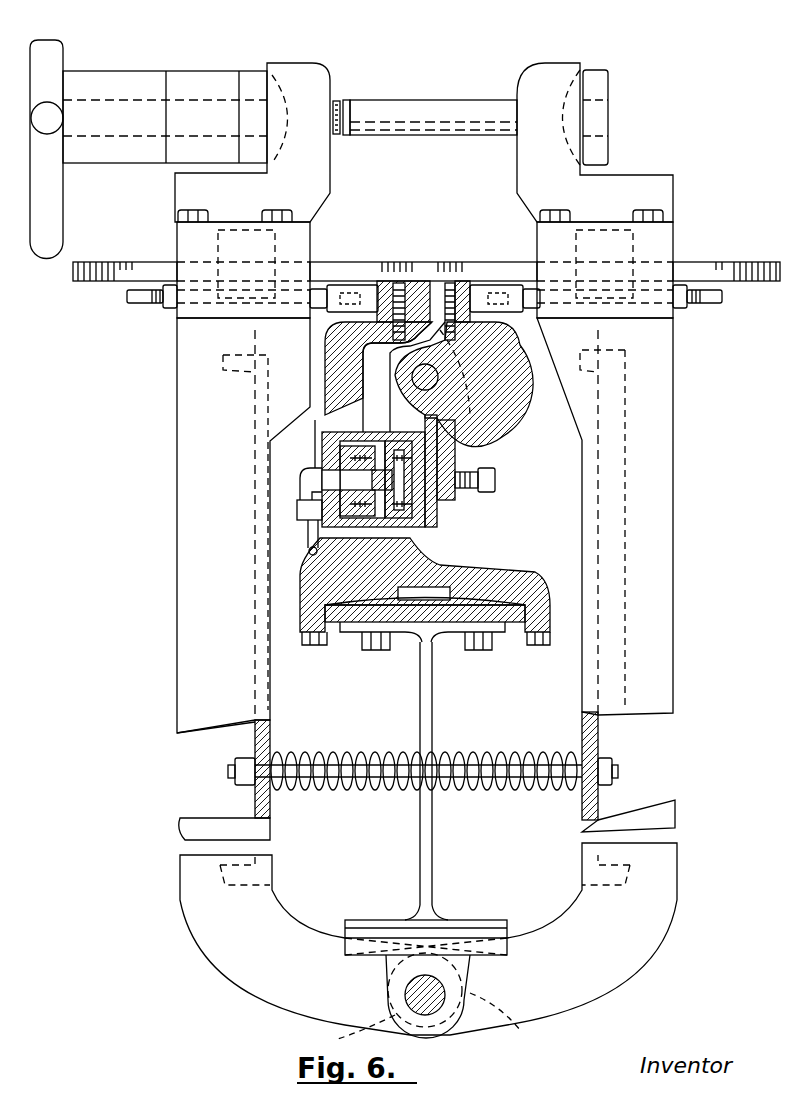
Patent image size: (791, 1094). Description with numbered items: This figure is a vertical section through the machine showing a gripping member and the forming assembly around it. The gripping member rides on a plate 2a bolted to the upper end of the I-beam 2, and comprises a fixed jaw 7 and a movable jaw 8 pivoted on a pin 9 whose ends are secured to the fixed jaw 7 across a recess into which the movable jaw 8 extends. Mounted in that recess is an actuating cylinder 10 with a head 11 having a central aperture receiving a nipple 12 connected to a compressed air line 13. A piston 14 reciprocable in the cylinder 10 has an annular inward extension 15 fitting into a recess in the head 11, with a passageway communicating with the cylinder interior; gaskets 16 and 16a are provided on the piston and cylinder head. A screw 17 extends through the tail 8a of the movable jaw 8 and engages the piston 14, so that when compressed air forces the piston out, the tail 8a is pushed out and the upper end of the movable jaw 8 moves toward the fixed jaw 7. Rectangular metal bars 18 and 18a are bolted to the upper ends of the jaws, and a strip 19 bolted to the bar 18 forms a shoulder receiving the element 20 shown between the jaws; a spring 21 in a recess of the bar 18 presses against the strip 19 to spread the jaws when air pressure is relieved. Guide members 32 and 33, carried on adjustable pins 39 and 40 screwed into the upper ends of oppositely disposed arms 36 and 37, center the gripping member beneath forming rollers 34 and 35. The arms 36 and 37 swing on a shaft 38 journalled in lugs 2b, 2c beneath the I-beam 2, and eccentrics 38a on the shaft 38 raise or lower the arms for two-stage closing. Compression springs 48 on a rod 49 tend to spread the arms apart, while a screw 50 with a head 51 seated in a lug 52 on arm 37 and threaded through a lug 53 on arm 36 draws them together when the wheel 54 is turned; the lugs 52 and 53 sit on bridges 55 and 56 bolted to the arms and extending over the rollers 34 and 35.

The I-beam 2 is at (434, 688).
The plate 2a is at (400, 635).
The lug 2b is at (505, 1019).
The lug 2c is at (356, 1032).
The fixed jaw 7 is at (478, 576).
The movable jaw 8 is at (512, 440).
The tail 8a is at (456, 498).
The pin 9 is at (411, 377).
The actuating cylinder 10 is at (378, 432).
The head 11 is at (340, 450).
The nipple 12 is at (322, 480).
The compressed air line 13 is at (316, 540).
The piston 14 is at (400, 441).
The annular inward extension 15 is at (367, 503).
The gasket 16 is at (392, 441).
The gasket 16a is at (437, 517).
The screw 17 is at (497, 477).
The rectangular metal bar 18 is at (386, 281).
The rectangular metal bar 18a is at (466, 281).
The strip 19 is at (402, 283).
The element 20 is at (450, 283).
The spring 21 is at (397, 346).
The guide member 32 is at (335, 312).
The guide member 33 is at (512, 312).
The forming roller 34 is at (100, 283).
The forming roller 35 is at (745, 283).
The arm 36 is at (177, 573).
The arm 37 is at (676, 598).
The shaft 38 is at (435, 1005).
The eccentric 38a is at (405, 993).
The adjustable pin 39 is at (135, 308).
The adjustable pin 40 is at (700, 308).
The compression spring 48 is at (365, 752).
The rod 49 is at (368, 790).
The screw 50 is at (395, 100).
The head 51 is at (606, 66).
The lug 52 is at (528, 176).
The lug 53 is at (318, 177).
The wheel 54 is at (66, 52).
The bridge 55 is at (306, 238).
The bridge 56 is at (676, 238).